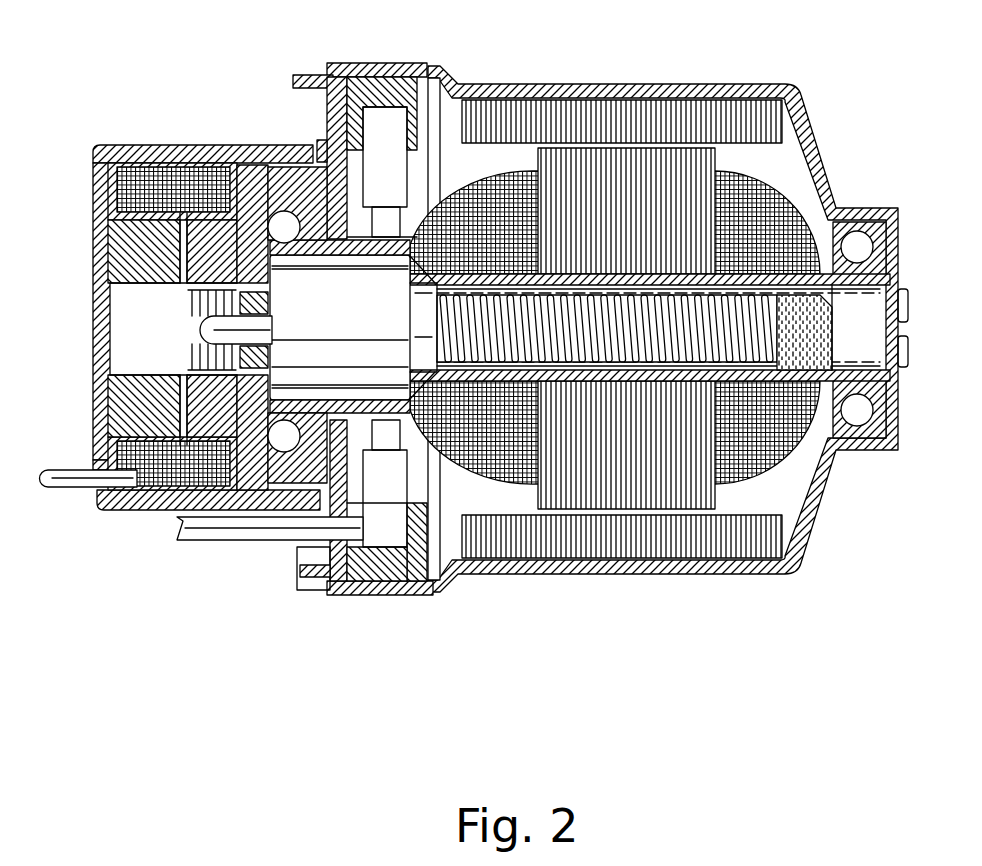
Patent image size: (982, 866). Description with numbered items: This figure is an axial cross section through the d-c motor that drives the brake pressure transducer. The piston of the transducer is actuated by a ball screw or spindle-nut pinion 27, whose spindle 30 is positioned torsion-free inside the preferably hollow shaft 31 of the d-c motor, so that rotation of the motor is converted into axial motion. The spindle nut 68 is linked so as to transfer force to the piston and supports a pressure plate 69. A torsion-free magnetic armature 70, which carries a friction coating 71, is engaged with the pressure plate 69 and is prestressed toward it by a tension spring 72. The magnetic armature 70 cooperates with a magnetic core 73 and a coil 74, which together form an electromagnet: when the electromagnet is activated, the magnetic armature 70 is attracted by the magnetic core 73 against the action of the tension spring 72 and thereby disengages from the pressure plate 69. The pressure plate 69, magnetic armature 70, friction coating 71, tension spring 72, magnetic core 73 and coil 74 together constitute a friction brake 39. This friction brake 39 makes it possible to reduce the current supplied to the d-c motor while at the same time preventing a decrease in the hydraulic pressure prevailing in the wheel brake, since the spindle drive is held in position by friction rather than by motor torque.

The spindle-nut pinion 27 is at (390, 415).
The spindle 30 is at (747, 300).
The hollow shaft 31 is at (812, 432).
The friction brake 39 is at (180, 320).
The spindle nut 68 is at (352, 262).
The pressure plate 69 is at (263, 157).
The magnetic armature 70 is at (195, 255).
The friction coating 71 is at (203, 280).
The tension spring 72 is at (197, 308).
The magnetic core 73 is at (140, 407).
The coil 74 is at (200, 157).